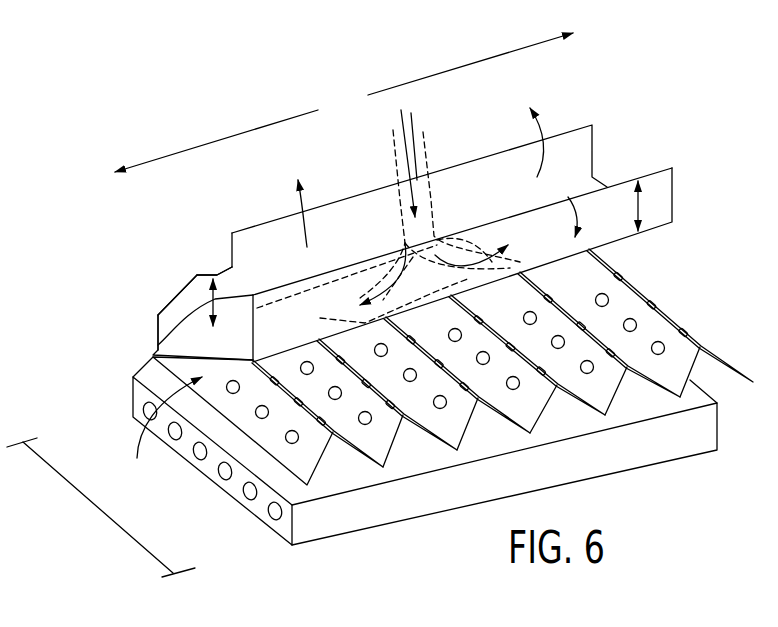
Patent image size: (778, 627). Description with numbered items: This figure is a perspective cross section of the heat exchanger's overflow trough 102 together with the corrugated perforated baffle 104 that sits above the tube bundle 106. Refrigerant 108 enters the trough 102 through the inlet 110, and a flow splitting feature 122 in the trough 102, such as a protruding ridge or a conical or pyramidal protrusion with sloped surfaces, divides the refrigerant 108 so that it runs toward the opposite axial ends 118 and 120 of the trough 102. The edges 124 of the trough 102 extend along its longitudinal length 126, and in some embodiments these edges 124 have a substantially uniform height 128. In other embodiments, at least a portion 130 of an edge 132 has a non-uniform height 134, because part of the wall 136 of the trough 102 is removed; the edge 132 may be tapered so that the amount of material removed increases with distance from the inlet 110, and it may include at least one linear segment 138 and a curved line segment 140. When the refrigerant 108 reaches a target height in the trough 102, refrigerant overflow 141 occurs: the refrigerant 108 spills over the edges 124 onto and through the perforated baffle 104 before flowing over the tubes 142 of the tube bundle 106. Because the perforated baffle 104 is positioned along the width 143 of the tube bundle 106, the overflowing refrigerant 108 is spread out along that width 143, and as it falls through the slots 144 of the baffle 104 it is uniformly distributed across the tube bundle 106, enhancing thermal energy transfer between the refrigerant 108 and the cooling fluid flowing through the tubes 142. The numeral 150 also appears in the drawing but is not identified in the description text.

The overflow trough 102 is at (258, 242).
The perforated baffle 104 is at (258, 418).
The tube bundle 106 is at (308, 520).
The refrigerant 108 is at (410, 112).
The inlet 110 is at (418, 157).
The axial end 118 is at (127, 313).
The axial end 120 is at (622, 138).
The flow splitting feature 122 is at (363, 287).
The edges 124 is at (333, 223).
The longitudinal length 126 is at (344, 102).
The uniform height 128 is at (640, 205).
The portion 130 is at (176, 256).
The edge 132 is at (240, 230).
The non-uniform height 134 is at (160, 340).
The wall 136 is at (281, 277).
The linear segment 138 is at (175, 295).
The curved line segment 140 is at (225, 268).
The refrigerant overflow 141 is at (338, 305).
The tubes 142 is at (275, 515).
The width 143 is at (100, 509).
The slots 144 is at (291, 444).
The air flow 150 is at (160, 431).